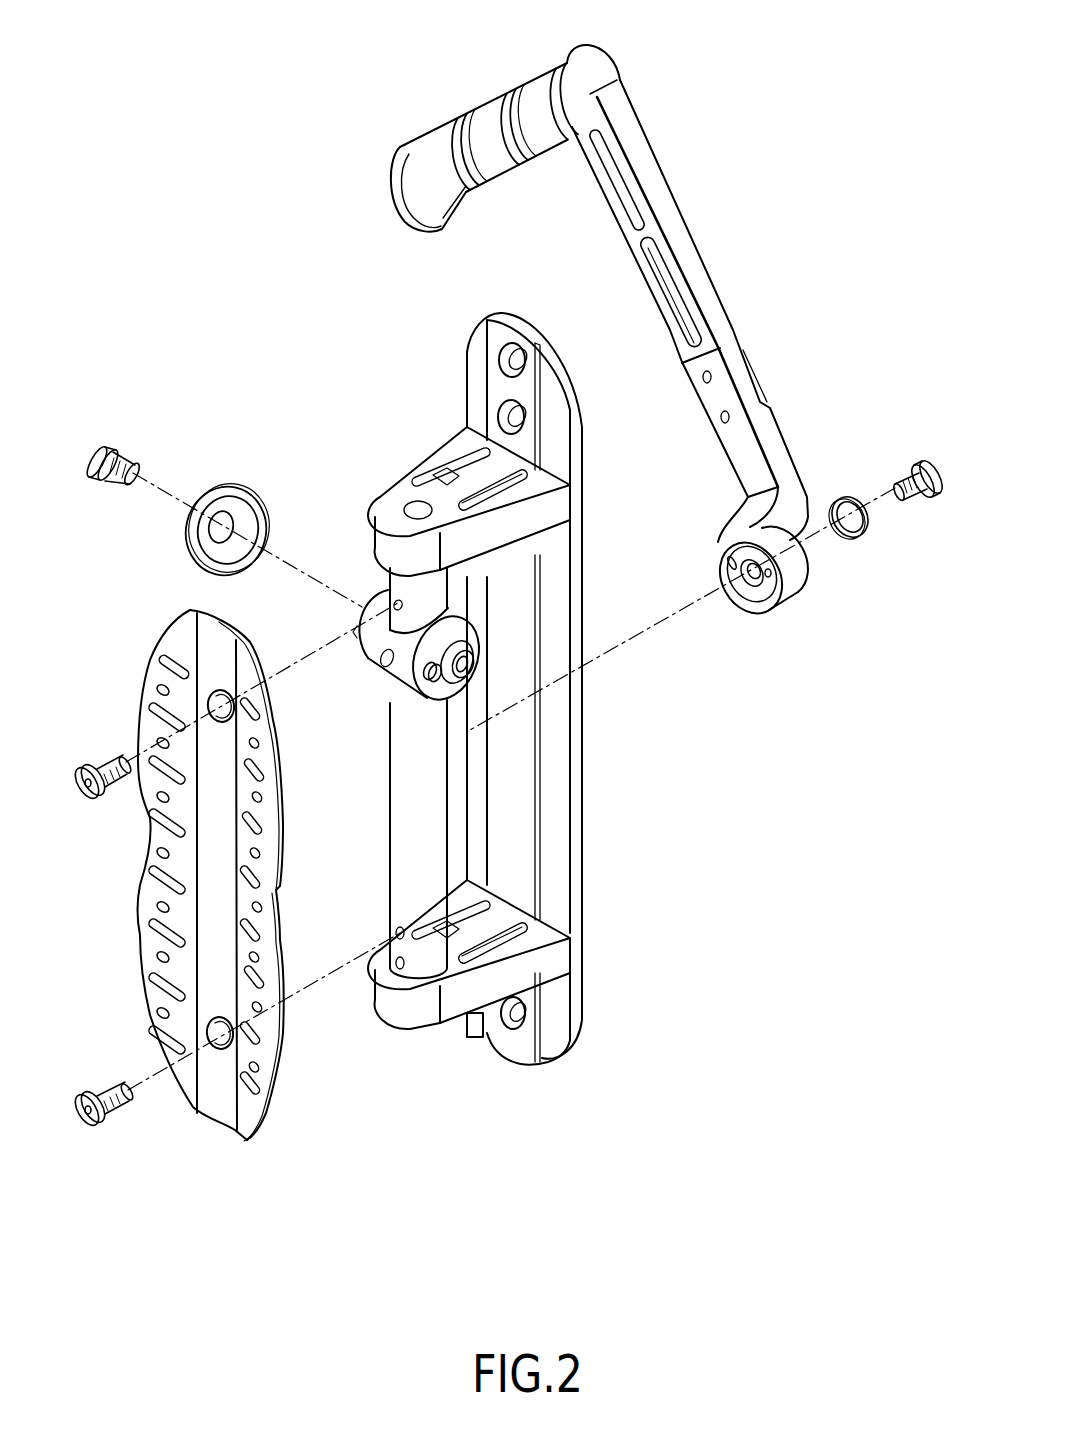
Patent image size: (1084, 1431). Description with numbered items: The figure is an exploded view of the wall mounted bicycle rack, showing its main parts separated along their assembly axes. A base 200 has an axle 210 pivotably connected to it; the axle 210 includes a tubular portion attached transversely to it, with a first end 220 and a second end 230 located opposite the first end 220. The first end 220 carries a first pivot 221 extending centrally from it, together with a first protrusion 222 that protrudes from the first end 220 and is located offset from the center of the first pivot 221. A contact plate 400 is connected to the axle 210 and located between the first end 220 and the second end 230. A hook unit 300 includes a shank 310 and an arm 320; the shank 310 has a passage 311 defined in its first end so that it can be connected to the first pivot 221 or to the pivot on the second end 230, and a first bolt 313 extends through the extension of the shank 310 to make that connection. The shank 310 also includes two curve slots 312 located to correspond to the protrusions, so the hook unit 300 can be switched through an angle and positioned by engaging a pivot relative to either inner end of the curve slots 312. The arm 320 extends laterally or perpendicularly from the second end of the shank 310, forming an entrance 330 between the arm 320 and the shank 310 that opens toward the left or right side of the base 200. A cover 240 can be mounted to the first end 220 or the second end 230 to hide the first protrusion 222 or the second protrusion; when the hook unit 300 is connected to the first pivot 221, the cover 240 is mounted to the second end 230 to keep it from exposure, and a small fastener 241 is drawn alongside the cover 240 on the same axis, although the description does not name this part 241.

The base 200 is at (603, 882).
The axle 210 is at (397, 888).
The first end 220 is at (442, 690).
The first pivot 221 is at (466, 656).
The first protrusion 222 is at (433, 676).
The second end 230 is at (373, 605).
The cover 240 is at (238, 489).
The screw 241 is at (130, 458).
The hook unit 300 is at (724, 120).
The shank 310 is at (712, 258).
The passage 311 is at (743, 585).
The curve slots 312 is at (725, 562).
The first bolt 313 is at (907, 467).
The arm 320 is at (457, 100).
The entrance 330 is at (508, 243).
The contact plate 400 is at (128, 964).